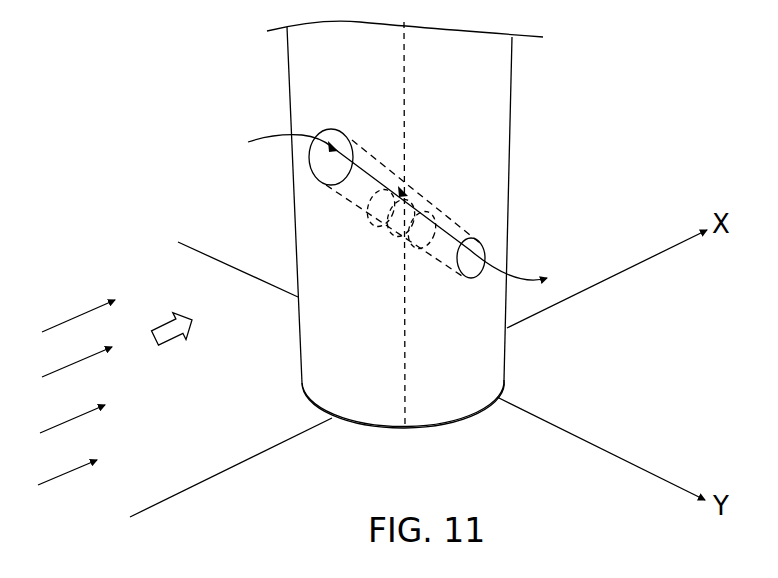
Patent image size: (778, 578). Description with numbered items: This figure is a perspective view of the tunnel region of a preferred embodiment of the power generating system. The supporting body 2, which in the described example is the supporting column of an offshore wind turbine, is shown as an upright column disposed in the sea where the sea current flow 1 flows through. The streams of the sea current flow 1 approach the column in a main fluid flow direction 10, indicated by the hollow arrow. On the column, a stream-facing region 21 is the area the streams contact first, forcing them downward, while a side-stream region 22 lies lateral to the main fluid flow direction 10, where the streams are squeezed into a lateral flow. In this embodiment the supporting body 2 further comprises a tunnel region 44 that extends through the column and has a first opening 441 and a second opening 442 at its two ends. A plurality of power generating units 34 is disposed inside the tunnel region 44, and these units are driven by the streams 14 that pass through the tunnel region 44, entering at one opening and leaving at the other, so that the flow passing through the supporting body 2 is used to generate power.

The sea current flow 1 is at (67, 320).
The main fluid flow direction 10 is at (172, 318).
The supporting body 2 is at (295, 60).
The stream-facing region 21 is at (360, 417).
The side-stream region 22 is at (438, 417).
The streams 14 is at (265, 138).
The first opening 441 is at (322, 170).
The second opening 442 is at (473, 267).
The tunnel region 44 is at (358, 198).
The power generating units 34 is at (425, 248).